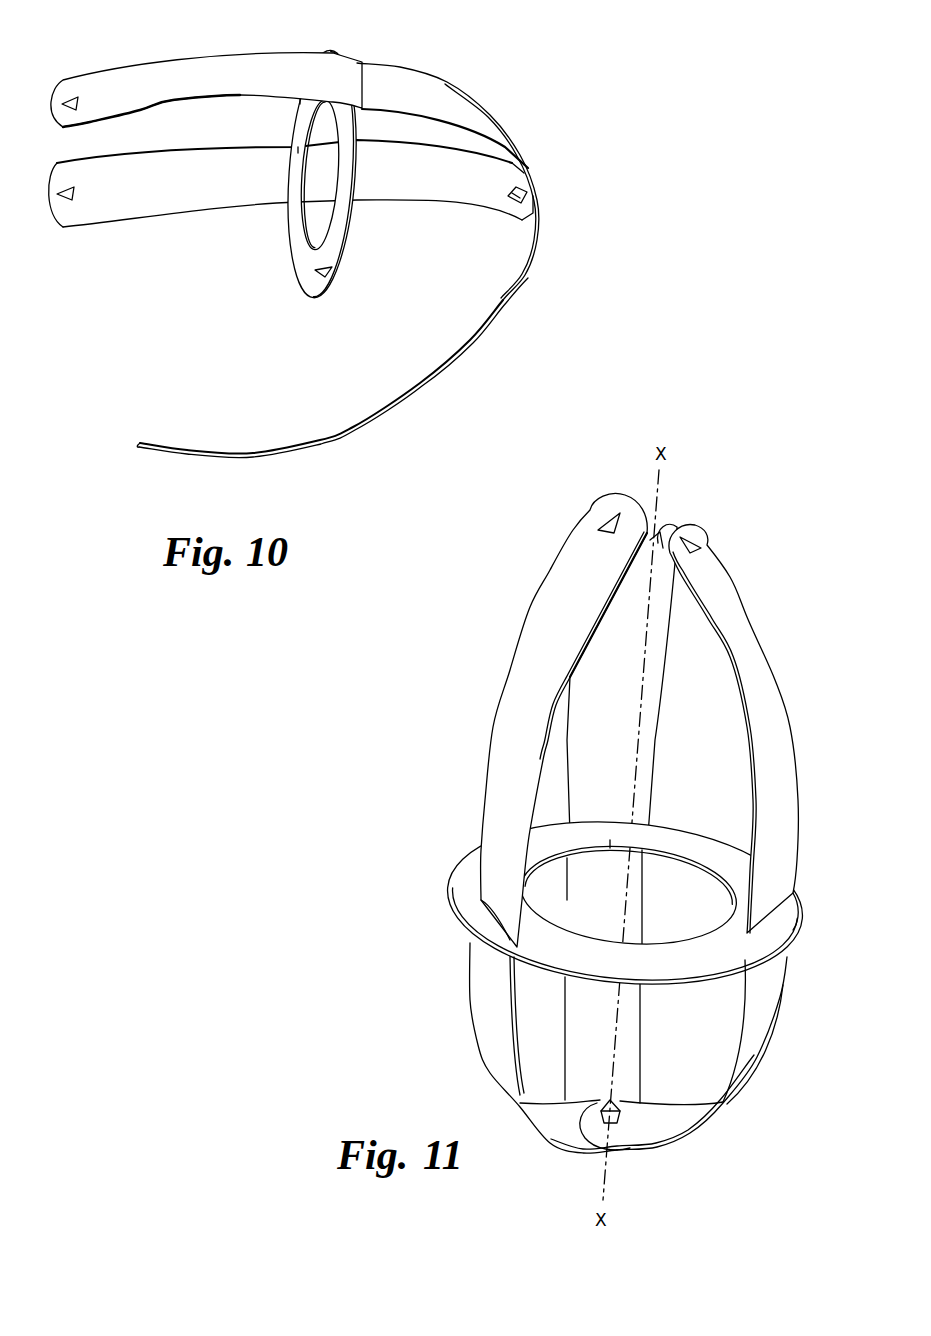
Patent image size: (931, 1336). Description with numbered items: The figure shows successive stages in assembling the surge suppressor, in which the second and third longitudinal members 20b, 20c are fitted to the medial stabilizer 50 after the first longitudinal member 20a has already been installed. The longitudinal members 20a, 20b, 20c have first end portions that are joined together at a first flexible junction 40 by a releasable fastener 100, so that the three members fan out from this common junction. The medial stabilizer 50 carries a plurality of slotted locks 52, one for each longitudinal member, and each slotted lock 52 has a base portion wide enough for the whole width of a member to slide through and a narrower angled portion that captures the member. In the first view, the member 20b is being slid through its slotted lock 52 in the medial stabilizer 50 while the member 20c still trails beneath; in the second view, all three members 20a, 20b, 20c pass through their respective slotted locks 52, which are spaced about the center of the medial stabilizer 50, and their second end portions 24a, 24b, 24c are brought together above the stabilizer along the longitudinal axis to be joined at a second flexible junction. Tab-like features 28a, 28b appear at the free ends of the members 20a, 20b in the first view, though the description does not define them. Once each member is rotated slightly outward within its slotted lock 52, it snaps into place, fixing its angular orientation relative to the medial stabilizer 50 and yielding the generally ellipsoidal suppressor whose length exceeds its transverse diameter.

In FIG. 10, the first longitudinal member 20a is at (201, 84).
In FIG. 11, the first longitudinal member 20a is at (534, 740).
In FIG. 10, the second longitudinal member 20b is at (198, 190).
In FIG. 11, the second longitudinal member 20b is at (624, 770).
In FIG. 10, the third longitudinal member 20c is at (350, 427).
In FIG. 11, the third longitudinal member 20c is at (791, 736).
In FIG. 11, the second end portion 24a is at (590, 547).
In FIG. 11, the second end portion 24b is at (640, 560).
In FIG. 11, the second end portion 24c is at (705, 558).
In FIG. 10, the strap end 28a is at (76, 103).
In FIG. 10, the strap end 28b is at (74, 196).
In FIG. 10, the first flexible junction 40 is at (536, 208).
In FIG. 11, the first flexible junction 40 is at (625, 1121).
In FIG. 10, the medial stabilizer 50 is at (358, 127).
In FIG. 11, the medial stabilizer 50 is at (676, 973).
In FIG. 10, the slotted lock 52 is at (340, 80).
In FIG. 11, the slotted lock 52 is at (483, 917).
In FIG. 10, the releasable fastener 100 is at (516, 188).
In FIG. 11, the releasable fastener 100 is at (620, 1107).